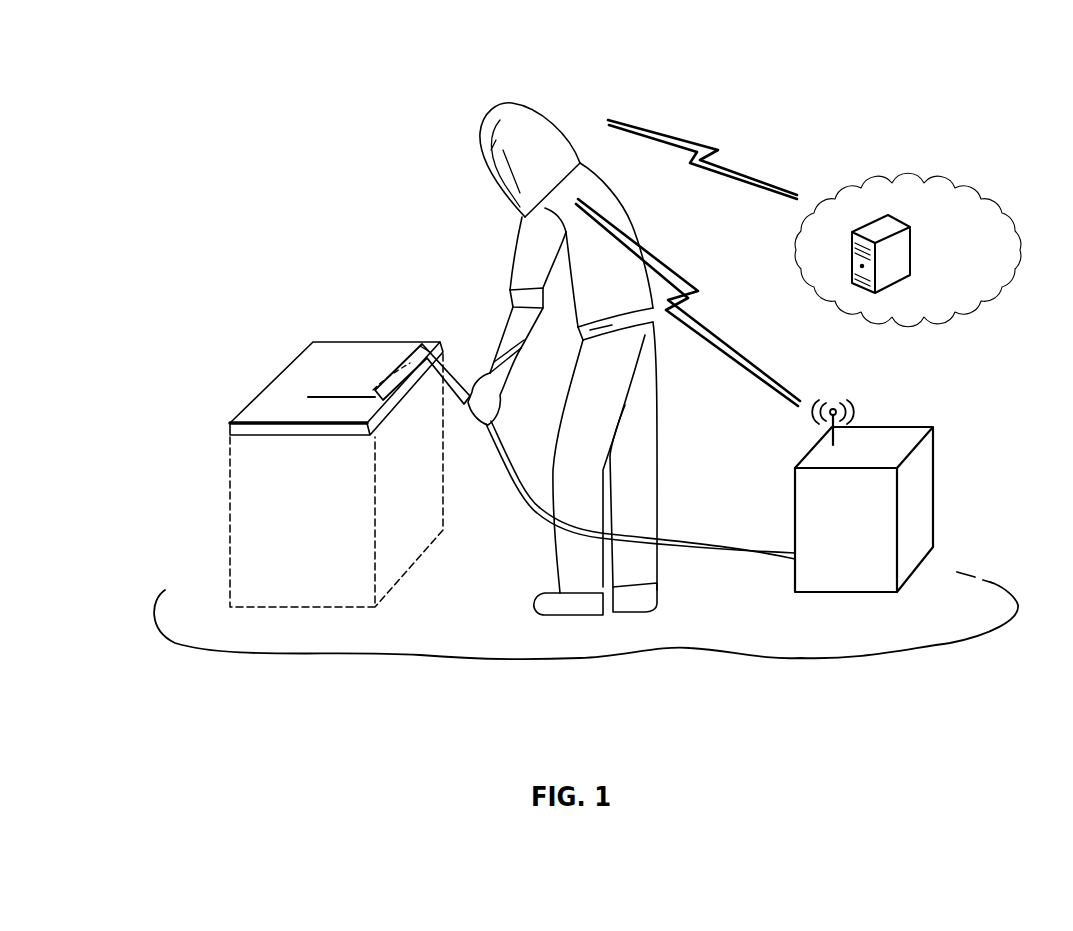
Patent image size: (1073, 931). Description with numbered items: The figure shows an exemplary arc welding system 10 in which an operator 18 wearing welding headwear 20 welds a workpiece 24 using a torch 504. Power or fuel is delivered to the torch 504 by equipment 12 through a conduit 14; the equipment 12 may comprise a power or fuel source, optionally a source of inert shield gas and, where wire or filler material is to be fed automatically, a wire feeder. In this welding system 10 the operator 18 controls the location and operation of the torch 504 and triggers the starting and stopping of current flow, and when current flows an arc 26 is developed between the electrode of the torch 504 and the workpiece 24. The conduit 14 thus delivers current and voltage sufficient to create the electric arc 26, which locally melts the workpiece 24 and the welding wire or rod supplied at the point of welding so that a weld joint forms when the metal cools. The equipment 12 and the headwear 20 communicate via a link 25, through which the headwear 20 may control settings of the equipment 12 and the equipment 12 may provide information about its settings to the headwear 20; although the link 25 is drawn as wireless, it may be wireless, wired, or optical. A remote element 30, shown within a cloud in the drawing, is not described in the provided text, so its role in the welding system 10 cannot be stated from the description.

The welding system 10 is at (818, 118).
The equipment 12 is at (875, 433).
The conduit 14 is at (700, 527).
The operator 18 is at (637, 188).
The welding headwear 20 is at (547, 101).
The workpiece 24 is at (300, 355).
The link 25 is at (695, 292).
The arc 26 is at (373, 387).
The remote server / cloud 30 is at (909, 239).
The torch 504 is at (462, 366).